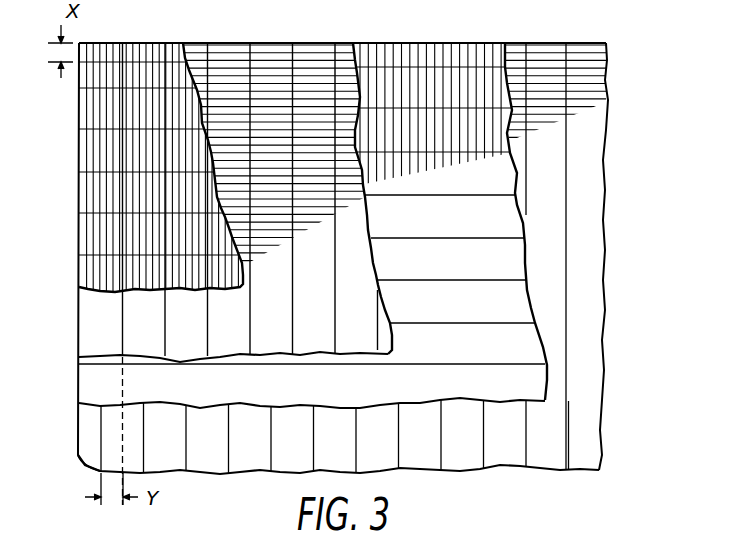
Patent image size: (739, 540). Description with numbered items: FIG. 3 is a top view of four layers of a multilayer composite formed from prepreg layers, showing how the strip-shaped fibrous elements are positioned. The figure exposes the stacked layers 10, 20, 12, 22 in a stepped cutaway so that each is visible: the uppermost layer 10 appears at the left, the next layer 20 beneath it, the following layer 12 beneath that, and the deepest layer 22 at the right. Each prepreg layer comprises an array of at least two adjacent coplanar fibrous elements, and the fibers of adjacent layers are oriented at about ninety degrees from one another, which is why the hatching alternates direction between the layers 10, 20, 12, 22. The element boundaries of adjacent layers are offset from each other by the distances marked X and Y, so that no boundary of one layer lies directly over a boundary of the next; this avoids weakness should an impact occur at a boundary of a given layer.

The first metallization layer region 10 is at (138, 43).
The second layer region 20 is at (277, 43).
The third layer region 12 is at (428, 45).
The fourth layer region 22 is at (567, 43).